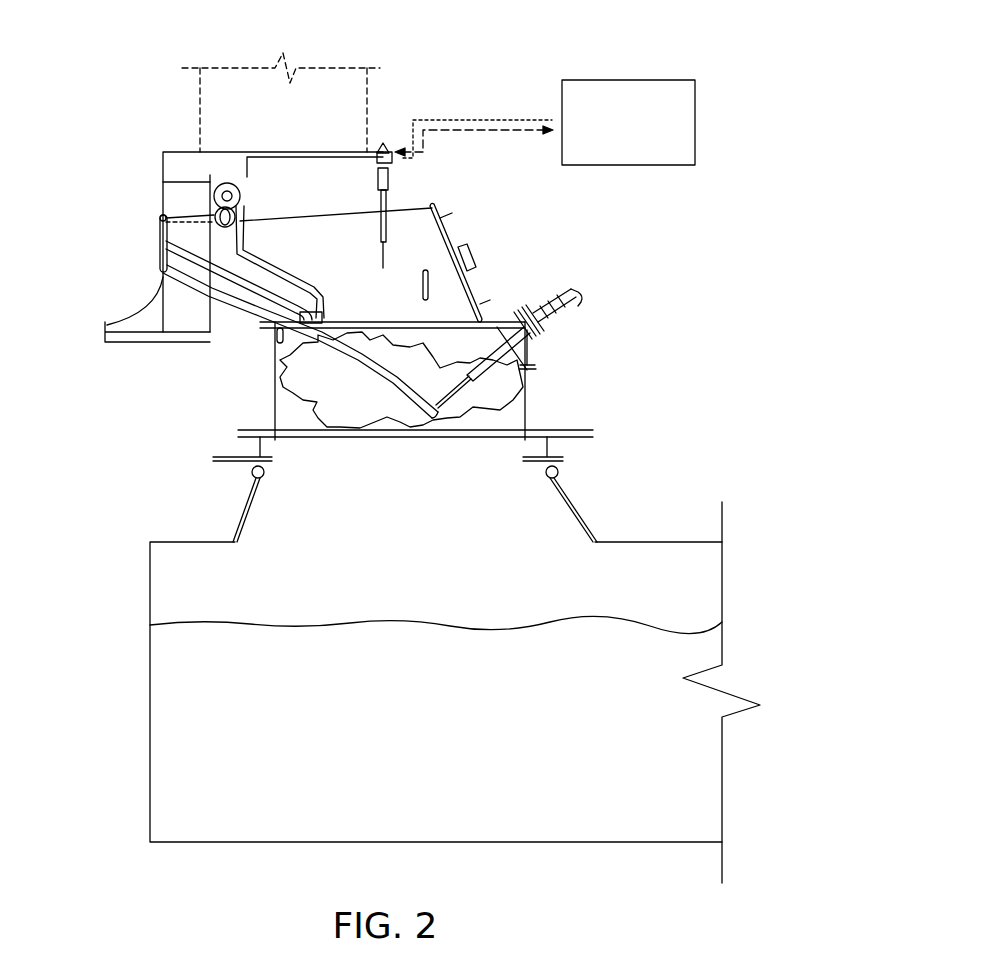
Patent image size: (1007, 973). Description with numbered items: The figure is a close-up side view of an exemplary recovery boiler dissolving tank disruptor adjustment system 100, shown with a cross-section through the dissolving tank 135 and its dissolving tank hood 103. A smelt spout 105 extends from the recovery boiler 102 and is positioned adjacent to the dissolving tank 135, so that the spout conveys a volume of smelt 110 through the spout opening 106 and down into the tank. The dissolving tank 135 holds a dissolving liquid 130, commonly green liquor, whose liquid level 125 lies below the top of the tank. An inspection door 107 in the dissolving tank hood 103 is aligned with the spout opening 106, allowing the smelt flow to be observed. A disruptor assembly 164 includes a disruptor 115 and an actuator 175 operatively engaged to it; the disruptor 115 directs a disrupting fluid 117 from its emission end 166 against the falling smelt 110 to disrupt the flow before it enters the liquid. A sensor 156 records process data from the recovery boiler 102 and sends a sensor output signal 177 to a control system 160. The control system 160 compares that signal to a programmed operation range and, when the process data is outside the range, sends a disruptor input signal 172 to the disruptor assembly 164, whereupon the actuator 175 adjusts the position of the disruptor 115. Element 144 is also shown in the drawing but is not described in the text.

The recovery boiler dissolving tank disruptor adjustment system 100 is at (596, 30).
The recovery boiler 102 is at (72, 175).
The dissolving tank hood 103 is at (562, 420).
The smelt spout 105 is at (259, 296).
The spout opening 106 is at (162, 257).
The inspection door 107 is at (457, 228).
The smelt 110 is at (410, 398).
The disruptor 115 is at (575, 296).
The disrupting fluid 117 is at (447, 393).
The liquid level 125 is at (230, 622).
The dissolving liquid 130 is at (300, 702).
The dissolving tank 135 is at (667, 514).
The rod assembly 144 is at (338, 158).
The sensor 156 is at (383, 250).
The control system 160 is at (650, 136).
The disruptor assembly 164 is at (518, 280).
The emission end 166 is at (458, 414).
The disruptor input signal 172 is at (507, 118).
The actuator 175 is at (547, 345).
The sensor output signal 177 is at (487, 133).